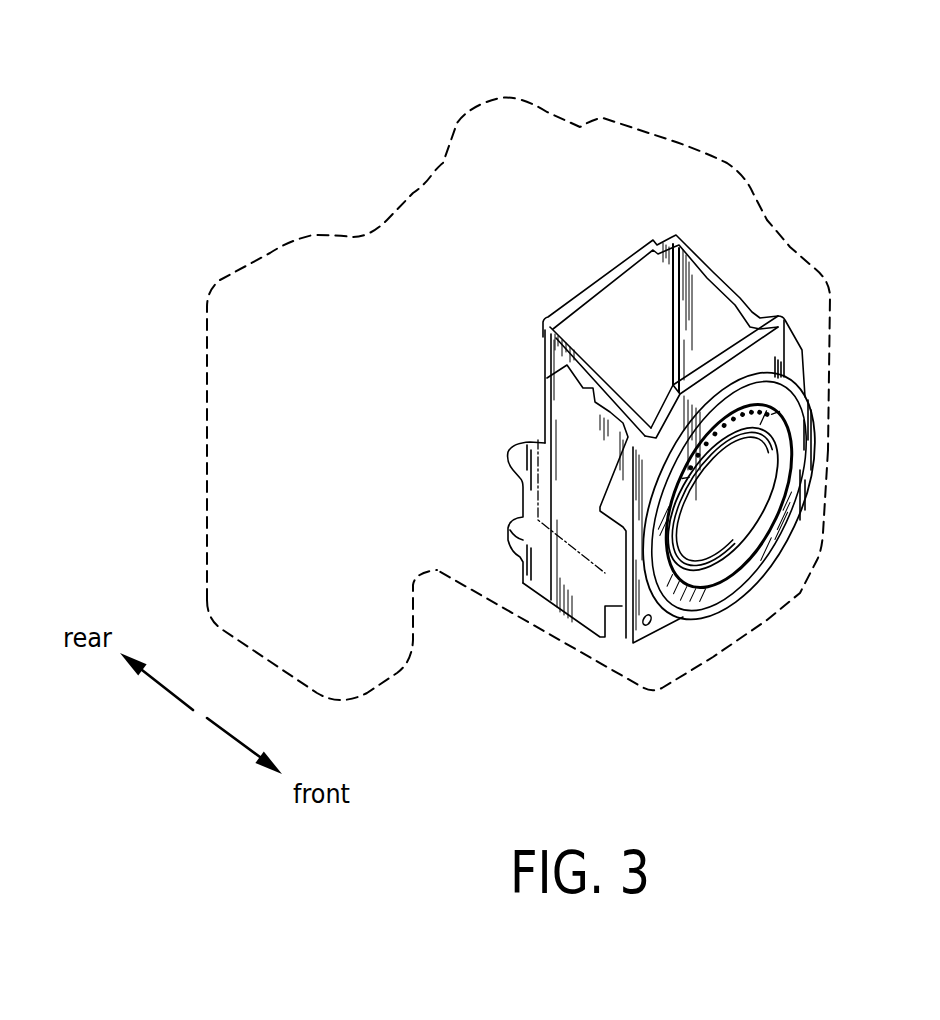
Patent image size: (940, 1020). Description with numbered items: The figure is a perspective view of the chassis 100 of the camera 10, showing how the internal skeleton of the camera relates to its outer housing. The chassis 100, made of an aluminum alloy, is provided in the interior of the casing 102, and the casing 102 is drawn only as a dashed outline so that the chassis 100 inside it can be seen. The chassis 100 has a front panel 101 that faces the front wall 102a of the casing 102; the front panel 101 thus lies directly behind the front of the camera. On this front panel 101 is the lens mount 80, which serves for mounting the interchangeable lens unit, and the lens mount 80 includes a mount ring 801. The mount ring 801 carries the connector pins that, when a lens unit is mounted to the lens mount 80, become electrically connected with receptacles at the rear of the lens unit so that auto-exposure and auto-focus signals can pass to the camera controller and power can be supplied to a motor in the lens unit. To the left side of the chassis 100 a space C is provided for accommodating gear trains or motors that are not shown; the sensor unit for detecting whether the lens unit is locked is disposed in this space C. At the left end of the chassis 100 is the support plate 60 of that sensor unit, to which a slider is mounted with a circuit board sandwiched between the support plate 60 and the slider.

The camera 10 is at (814, 126).
The chassis 100 is at (753, 313).
The front panel 101 is at (790, 355).
The casing 102 is at (831, 300).
The front wall 102a is at (823, 558).
The support plate 60 is at (508, 528).
The lens mount 80 is at (806, 504).
The mount ring 801 is at (775, 423).
The space C is at (591, 582).